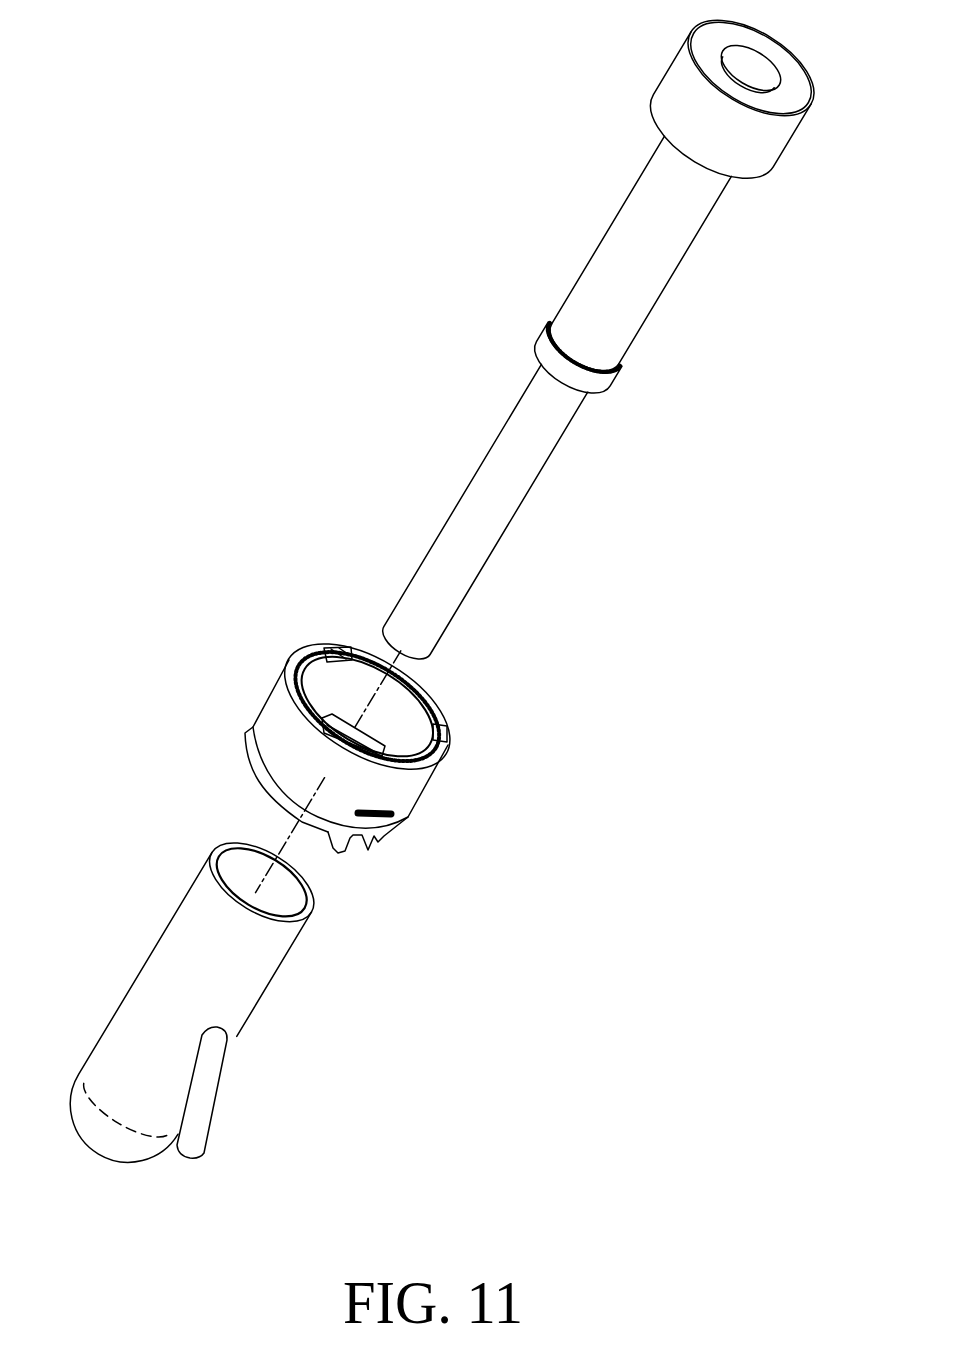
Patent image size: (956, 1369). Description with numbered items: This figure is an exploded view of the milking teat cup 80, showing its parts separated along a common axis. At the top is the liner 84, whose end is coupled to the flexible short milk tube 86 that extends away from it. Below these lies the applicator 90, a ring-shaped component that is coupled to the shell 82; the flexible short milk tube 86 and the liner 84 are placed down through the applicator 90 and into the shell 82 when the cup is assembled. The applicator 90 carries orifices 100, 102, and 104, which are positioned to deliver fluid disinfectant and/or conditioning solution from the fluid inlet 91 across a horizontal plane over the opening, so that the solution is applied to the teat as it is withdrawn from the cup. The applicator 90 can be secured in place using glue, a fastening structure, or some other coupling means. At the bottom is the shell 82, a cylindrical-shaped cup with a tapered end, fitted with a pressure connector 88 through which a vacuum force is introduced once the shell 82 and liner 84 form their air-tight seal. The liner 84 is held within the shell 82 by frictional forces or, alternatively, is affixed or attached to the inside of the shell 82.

The milking teat cup 80 is at (188, 404).
The shell 82 is at (156, 946).
The liner 84 is at (612, 222).
The flexible short milk tube 86 is at (474, 477).
The pressure connector 88 is at (215, 1093).
The applicator 90 is at (268, 692).
The fluid inlet 91 is at (351, 851).
The orifice 100 is at (340, 648).
The orifice 102 is at (325, 731).
The orifice 104 is at (447, 731).